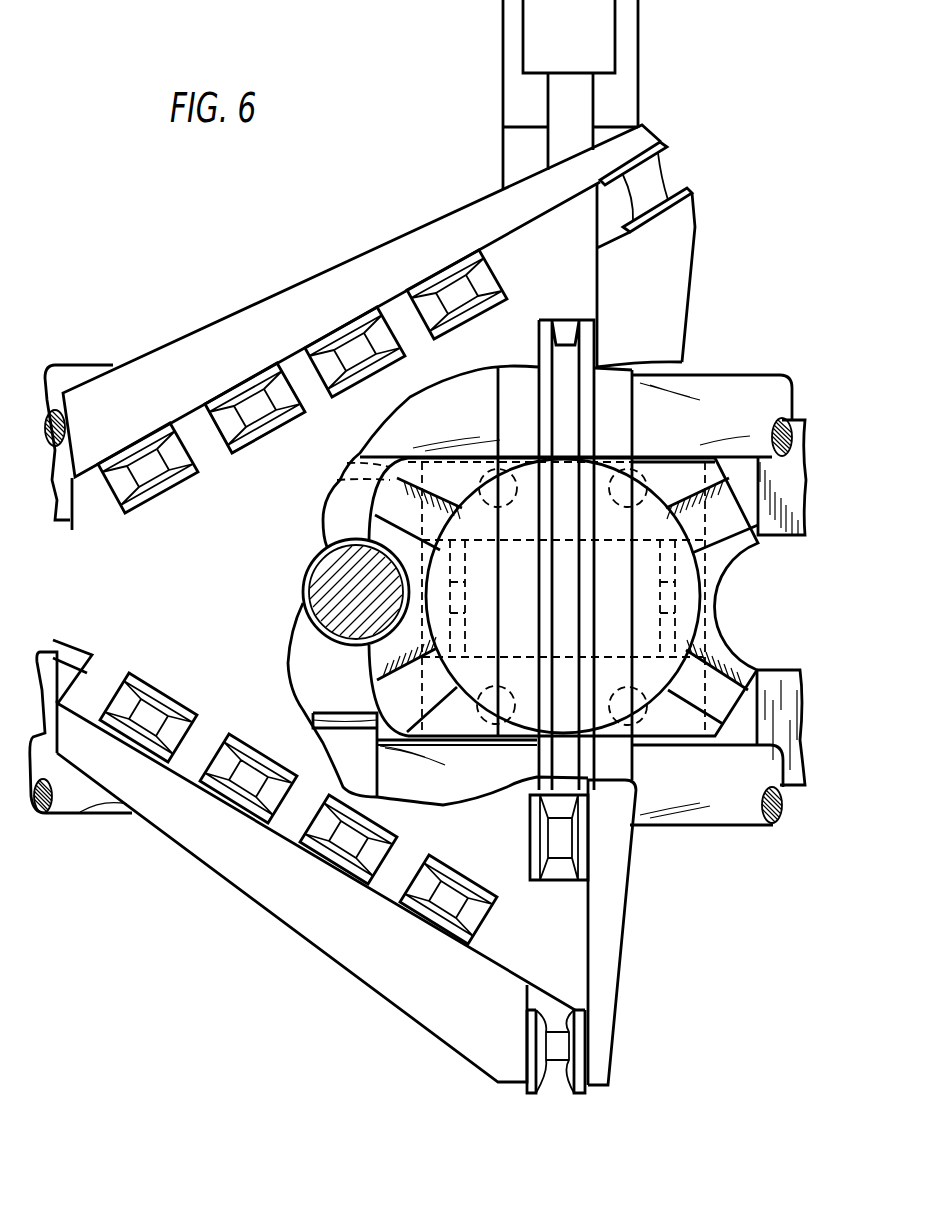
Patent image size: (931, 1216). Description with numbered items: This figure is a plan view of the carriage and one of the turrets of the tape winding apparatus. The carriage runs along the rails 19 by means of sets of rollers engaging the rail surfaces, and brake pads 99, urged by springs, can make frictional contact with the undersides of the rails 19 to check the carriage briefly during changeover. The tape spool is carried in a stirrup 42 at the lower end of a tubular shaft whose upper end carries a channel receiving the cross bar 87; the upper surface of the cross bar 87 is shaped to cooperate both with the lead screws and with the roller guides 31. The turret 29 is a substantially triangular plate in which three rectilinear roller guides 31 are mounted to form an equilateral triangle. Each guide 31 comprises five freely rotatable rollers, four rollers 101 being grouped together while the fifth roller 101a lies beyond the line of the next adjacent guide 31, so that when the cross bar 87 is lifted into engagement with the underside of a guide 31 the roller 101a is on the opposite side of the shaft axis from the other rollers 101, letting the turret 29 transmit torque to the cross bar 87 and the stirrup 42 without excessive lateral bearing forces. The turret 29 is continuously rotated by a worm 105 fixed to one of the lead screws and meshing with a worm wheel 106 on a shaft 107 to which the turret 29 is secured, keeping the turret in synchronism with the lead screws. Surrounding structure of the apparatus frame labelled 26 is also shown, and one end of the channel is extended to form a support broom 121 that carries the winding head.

The support broom 121 is at (498, 133).
The turret 29 is at (412, 243).
The rollers 101 is at (350, 355).
The roller guide 31 is at (255, 358).
The fifth roller 101a is at (656, 176).
The housing 26 is at (703, 393).
The cross bar 87 is at (566, 413).
The rails 19 is at (767, 668).
The stirrup 42 is at (468, 507).
The brake pads 99 is at (612, 492).
The shaft 107 is at (325, 569).
The worm wheel 106 is at (300, 662).
The worm 105 is at (363, 776).